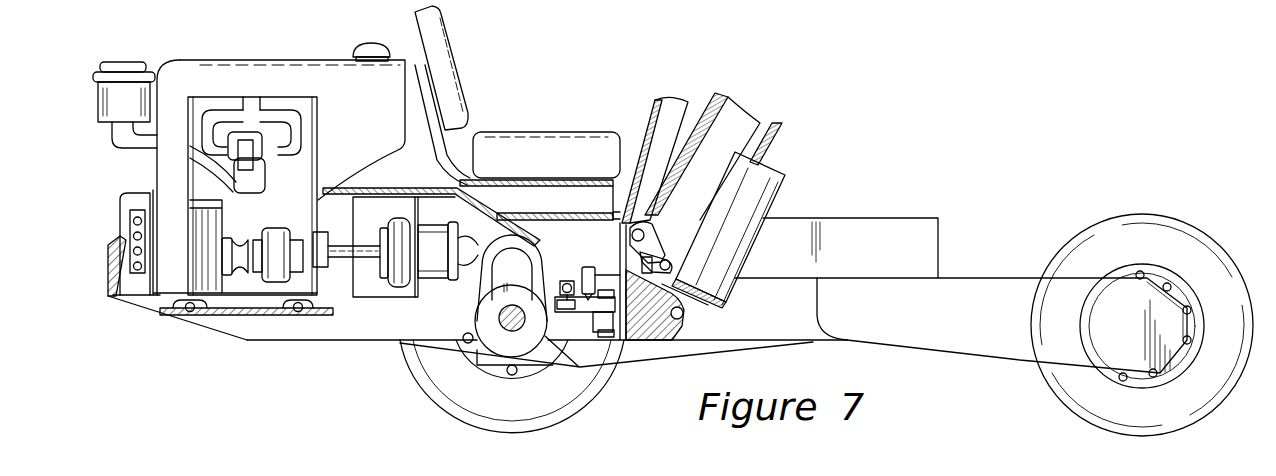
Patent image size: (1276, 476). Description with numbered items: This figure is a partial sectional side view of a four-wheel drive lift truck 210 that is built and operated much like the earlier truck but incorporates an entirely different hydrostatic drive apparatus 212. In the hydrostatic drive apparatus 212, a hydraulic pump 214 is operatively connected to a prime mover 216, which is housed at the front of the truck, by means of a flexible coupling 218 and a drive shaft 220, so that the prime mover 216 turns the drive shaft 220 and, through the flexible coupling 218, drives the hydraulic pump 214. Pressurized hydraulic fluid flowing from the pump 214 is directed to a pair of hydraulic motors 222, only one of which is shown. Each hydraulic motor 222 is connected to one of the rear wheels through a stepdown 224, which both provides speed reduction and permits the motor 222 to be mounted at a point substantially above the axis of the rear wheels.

The four-wheel drive lift truck 210 is at (572, 85).
The hydrostatic drive apparatus 212 is at (459, 283).
The hydraulic pump 214 is at (440, 245).
The prime mover 216 is at (220, 185).
The flexible coupling 218 is at (398, 266).
The drive shaft 220 is at (362, 250).
The hydraulic motor 222 is at (533, 250).
The stepdown 224 is at (533, 330).